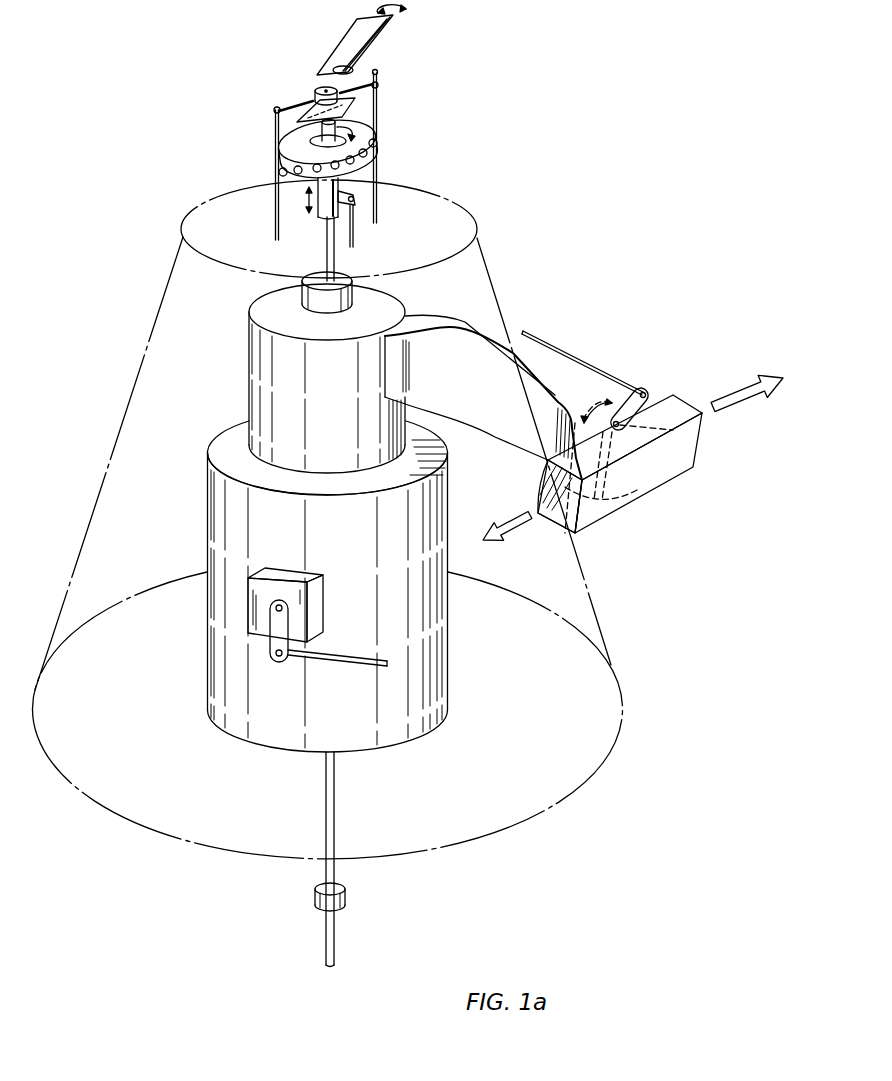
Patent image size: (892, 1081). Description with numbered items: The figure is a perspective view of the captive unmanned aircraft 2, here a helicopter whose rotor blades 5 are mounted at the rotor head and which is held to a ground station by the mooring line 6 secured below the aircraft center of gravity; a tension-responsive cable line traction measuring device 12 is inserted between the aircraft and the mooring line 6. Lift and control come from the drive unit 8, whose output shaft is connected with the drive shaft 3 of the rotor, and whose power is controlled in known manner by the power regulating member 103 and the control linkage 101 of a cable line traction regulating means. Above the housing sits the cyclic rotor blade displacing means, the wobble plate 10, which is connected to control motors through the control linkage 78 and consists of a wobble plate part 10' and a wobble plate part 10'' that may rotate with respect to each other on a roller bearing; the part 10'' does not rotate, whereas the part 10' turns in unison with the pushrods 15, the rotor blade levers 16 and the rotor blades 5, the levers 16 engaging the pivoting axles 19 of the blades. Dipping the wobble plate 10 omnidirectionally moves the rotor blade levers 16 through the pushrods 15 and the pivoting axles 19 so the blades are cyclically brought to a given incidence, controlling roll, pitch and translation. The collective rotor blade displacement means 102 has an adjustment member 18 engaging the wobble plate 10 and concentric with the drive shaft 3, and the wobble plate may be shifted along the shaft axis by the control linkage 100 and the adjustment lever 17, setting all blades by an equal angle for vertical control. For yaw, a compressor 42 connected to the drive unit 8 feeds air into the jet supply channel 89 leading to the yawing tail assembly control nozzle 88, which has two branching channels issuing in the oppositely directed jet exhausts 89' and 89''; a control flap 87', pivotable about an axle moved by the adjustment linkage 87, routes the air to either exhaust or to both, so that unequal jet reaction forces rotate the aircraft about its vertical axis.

The unmanned aircraft 2 is at (622, 661).
The drive shaft 3 is at (320, 280).
The rotor blades 5 is at (348, 43).
The mooring line 6 is at (336, 940).
The drive unit 8 is at (225, 528).
The wobble plate 10 is at (359, 148).
The wobble plate part 10' is at (287, 138).
The wobble plate part 10'' is at (293, 182).
The cable line traction measuring device 12 is at (347, 898).
The pushrods 15 is at (378, 103).
The rotor blade levers 16 is at (378, 72).
The adjustment lever 17 is at (355, 200).
The adjustment member 18 is at (352, 245).
The pivoting axles 19 is at (331, 84).
The compressor 42 is at (262, 410).
The control linkage 78 is at (379, 170).
The adjustment linkage 87 is at (582, 363).
The control flap 87' is at (621, 433).
The control nozzle 88 is at (648, 498).
The jet supply channel 89 is at (483, 397).
The jet exhaust 89' is at (583, 508).
The jet exhaust 89'' is at (664, 473).
The control linkage 100 is at (326, 222).
The control linkage 101 is at (373, 660).
The collective rotor blade displacement means 102 is at (306, 218).
The power regulating member 103 is at (293, 590).